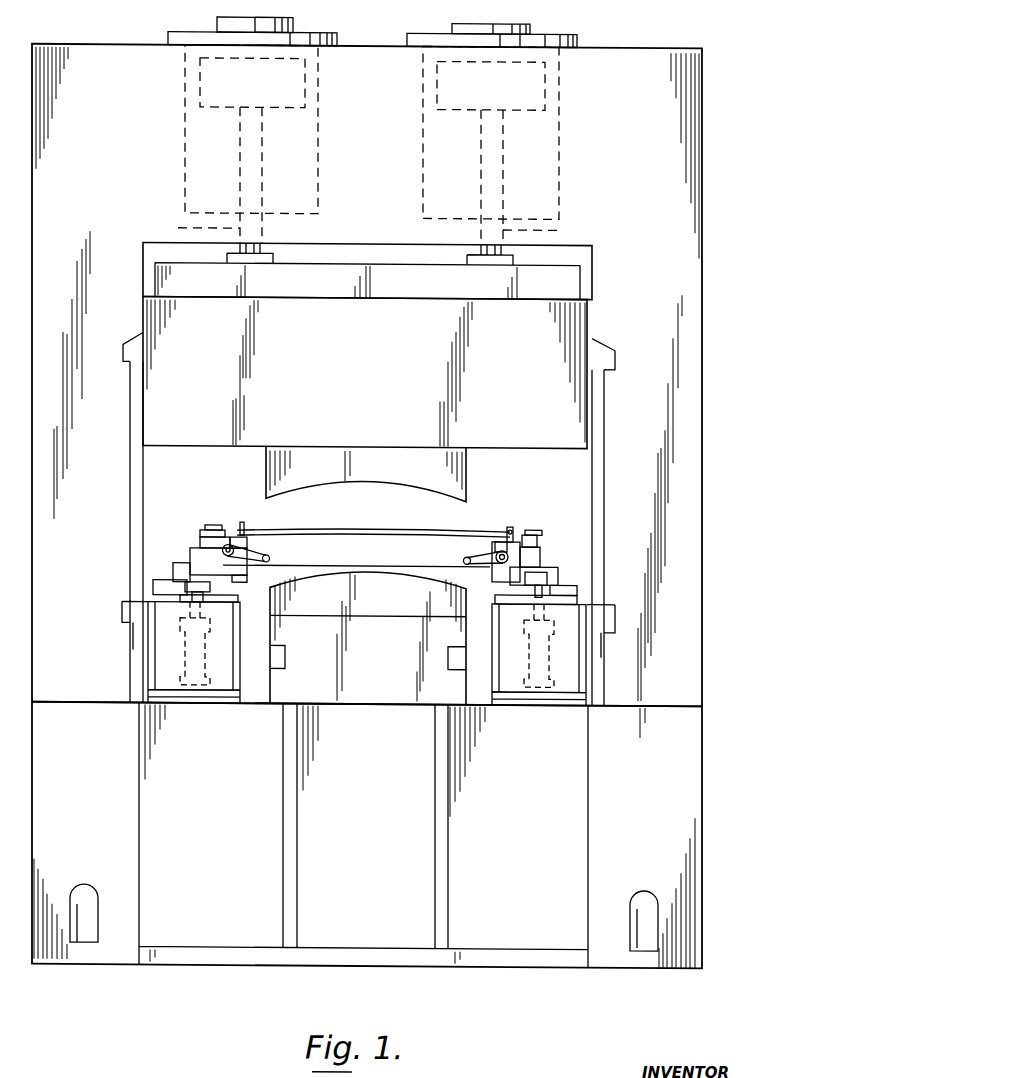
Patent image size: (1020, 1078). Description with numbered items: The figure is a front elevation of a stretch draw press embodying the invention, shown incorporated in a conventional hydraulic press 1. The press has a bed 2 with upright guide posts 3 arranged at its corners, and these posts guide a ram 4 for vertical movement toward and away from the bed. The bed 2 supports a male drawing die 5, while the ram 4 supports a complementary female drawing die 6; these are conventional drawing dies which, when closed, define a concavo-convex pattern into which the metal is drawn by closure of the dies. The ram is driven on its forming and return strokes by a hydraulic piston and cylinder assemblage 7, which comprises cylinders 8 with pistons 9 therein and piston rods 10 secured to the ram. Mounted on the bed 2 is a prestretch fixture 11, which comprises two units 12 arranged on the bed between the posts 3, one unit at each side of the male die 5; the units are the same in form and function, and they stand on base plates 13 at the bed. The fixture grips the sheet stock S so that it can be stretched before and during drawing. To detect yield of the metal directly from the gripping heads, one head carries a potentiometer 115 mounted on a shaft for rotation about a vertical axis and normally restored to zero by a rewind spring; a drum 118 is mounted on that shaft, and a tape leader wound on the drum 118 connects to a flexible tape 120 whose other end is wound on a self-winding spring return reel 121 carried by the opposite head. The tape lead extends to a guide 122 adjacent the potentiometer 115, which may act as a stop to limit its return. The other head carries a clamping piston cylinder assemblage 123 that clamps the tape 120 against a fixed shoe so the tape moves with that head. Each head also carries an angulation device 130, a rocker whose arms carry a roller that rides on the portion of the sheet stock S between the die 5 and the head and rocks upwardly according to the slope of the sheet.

The hydraulic press 1 is at (705, 500).
The bed 2 is at (565, 758).
The upright guide posts 3 is at (130, 441).
The ram 4 is at (367, 345).
The male drawing die 5 is at (368, 637).
The female drawing die 6 is at (366, 473).
The hydraulic piston and cylinder assemblage 7 is at (164, 35).
The cylinders 8 is at (185, 130).
The pistons 9 is at (200, 88).
The piston rods 10 is at (370, 176).
The prestretch fixture 11 is at (182, 552).
The units 12 is at (218, 644).
The base plates 13 is at (192, 700).
The potentiometer 115 is at (207, 525).
The drum 118 is at (242, 522).
The flexible tape 120 is at (365, 528).
The self-winding spring return reel 121 is at (535, 528).
The guide 122 is at (244, 527).
The clamping piston cylinder assemblage 123 is at (520, 513).
The angulation device 130 is at (270, 553).
The sheet stock S is at (386, 565).